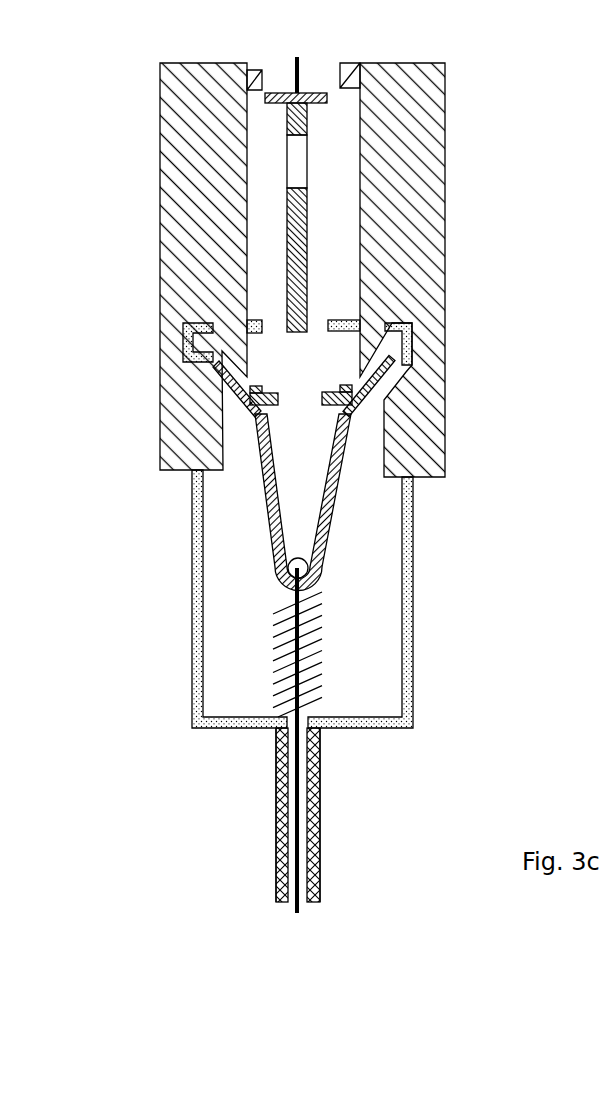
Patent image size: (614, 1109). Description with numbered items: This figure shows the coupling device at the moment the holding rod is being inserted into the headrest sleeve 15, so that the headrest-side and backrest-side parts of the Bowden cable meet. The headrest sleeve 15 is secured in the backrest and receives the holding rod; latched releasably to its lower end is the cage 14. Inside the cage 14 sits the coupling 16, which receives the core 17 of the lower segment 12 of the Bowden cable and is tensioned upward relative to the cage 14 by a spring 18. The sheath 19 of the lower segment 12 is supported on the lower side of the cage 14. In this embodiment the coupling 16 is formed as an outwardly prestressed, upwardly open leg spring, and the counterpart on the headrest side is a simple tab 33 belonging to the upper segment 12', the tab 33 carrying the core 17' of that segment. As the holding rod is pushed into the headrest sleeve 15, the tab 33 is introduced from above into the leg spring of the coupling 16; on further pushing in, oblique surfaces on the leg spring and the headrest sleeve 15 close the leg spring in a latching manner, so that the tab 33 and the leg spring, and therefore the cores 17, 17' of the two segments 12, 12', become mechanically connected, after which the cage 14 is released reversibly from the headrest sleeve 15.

The lower segment 12 is at (390, 815).
The upper segment 12' is at (394, 75).
The cage 14 is at (193, 572).
The headrest sleeve 15 is at (197, 202).
The coupling 16 is at (327, 525).
The core 17 is at (366, 740).
The core 17' is at (186, 95).
The spring 18 is at (312, 623).
The sheath 19 is at (315, 857).
The tab 33 is at (293, 268).